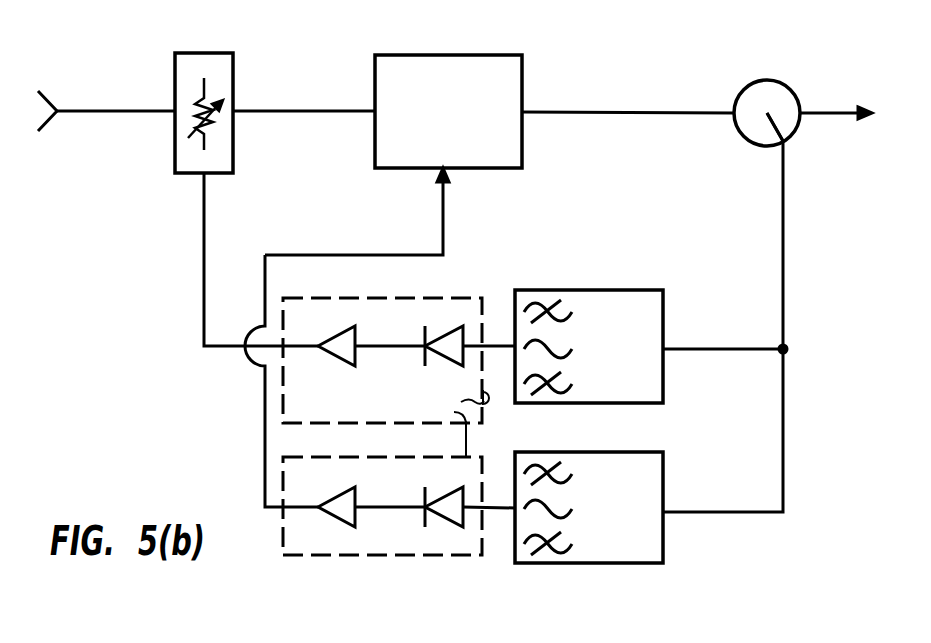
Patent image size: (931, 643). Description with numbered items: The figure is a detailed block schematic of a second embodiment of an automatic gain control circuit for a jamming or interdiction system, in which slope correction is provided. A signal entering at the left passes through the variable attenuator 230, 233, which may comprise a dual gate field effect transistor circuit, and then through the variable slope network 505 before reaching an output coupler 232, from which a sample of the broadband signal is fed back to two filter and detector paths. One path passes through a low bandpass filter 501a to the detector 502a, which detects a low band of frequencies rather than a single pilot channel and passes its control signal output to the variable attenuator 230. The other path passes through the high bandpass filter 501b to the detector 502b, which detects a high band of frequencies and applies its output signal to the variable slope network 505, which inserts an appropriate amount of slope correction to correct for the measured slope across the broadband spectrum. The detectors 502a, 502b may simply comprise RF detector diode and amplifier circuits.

The variable attenuator 230 is at (227, 93).
The variable attenuator 233 is at (189, 53).
The variable slope network 505 is at (406, 55).
The directional coupler 232 is at (763, 80).
The detector 502a is at (361, 298).
The detector 502b is at (370, 555).
The bandpass filter (low) 501a is at (542, 403).
The high bandpass filter 501b is at (542, 563).